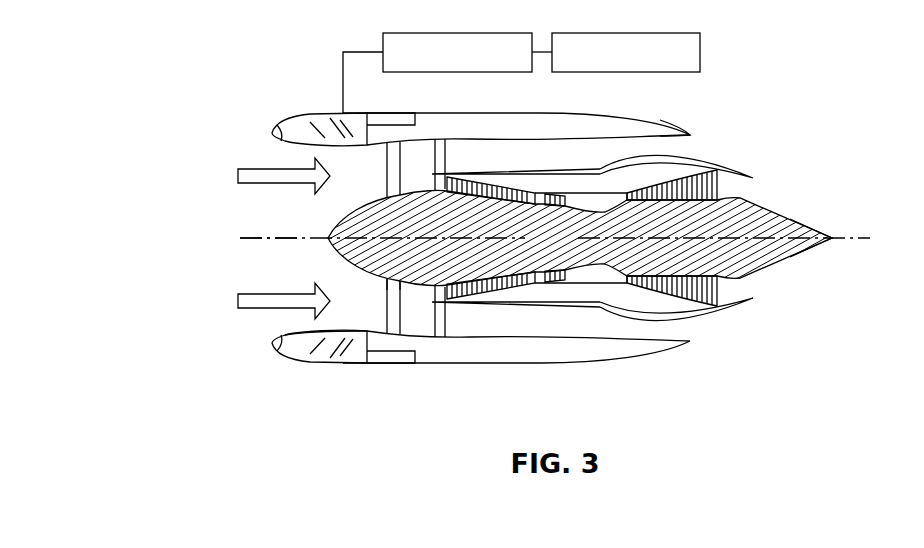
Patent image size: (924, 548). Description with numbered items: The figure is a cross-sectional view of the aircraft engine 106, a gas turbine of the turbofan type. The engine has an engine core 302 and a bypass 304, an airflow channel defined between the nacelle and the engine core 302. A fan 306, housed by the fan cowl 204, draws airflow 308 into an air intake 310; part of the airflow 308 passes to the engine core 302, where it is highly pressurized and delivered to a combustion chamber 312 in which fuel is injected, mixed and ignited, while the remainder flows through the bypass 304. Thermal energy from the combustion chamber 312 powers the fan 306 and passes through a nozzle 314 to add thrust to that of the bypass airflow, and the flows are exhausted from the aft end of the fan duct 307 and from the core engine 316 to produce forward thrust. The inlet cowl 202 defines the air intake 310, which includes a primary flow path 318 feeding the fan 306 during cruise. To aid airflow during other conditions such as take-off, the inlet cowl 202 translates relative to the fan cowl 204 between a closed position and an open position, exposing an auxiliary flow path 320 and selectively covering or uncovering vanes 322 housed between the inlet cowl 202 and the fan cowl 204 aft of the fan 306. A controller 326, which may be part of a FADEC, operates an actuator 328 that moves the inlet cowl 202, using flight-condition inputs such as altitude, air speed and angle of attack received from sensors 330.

The aircraft engine 106 is at (205, 45).
The inlet cowl 202 is at (284, 113).
The fan cowl 204 is at (419, 364).
The engine core 302 is at (531, 247).
The bypass 304 is at (461, 164).
The fan 306 is at (383, 307).
The fan duct 307 is at (623, 118).
The airflow 308 is at (238, 172).
The air intake 310 is at (243, 213).
The combustion chamber 312 is at (600, 267).
The nozzle 314 is at (736, 170).
The core engine 316 is at (814, 213).
The primary flow path 318 is at (313, 272).
The auxiliary flow path 320 is at (307, 417).
The vanes 322 is at (327, 117).
The controller 326 is at (448, 33).
The actuator 328 is at (385, 113).
The sensors 330 is at (614, 33).